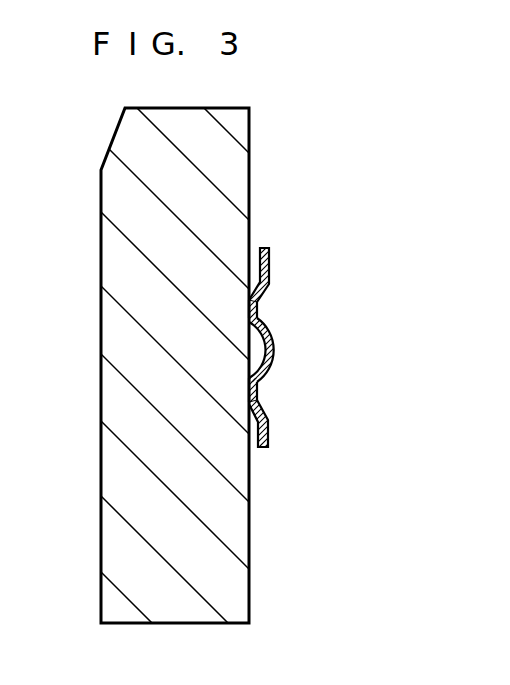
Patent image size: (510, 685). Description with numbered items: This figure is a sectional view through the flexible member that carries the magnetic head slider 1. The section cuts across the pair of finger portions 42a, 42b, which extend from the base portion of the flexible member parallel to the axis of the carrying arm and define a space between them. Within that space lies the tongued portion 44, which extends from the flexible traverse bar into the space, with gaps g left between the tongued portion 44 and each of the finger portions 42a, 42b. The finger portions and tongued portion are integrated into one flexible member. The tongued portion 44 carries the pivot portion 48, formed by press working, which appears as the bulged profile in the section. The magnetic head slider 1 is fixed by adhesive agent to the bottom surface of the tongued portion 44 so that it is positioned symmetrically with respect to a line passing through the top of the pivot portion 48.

The magnetic head slider 1 is at (108, 394).
The finger portion 42a is at (270, 264).
The finger portion 42b is at (272, 442).
The tongued portion 44 is at (268, 385).
The pivot portion 48 is at (275, 345).
The gap g is at (268, 291).